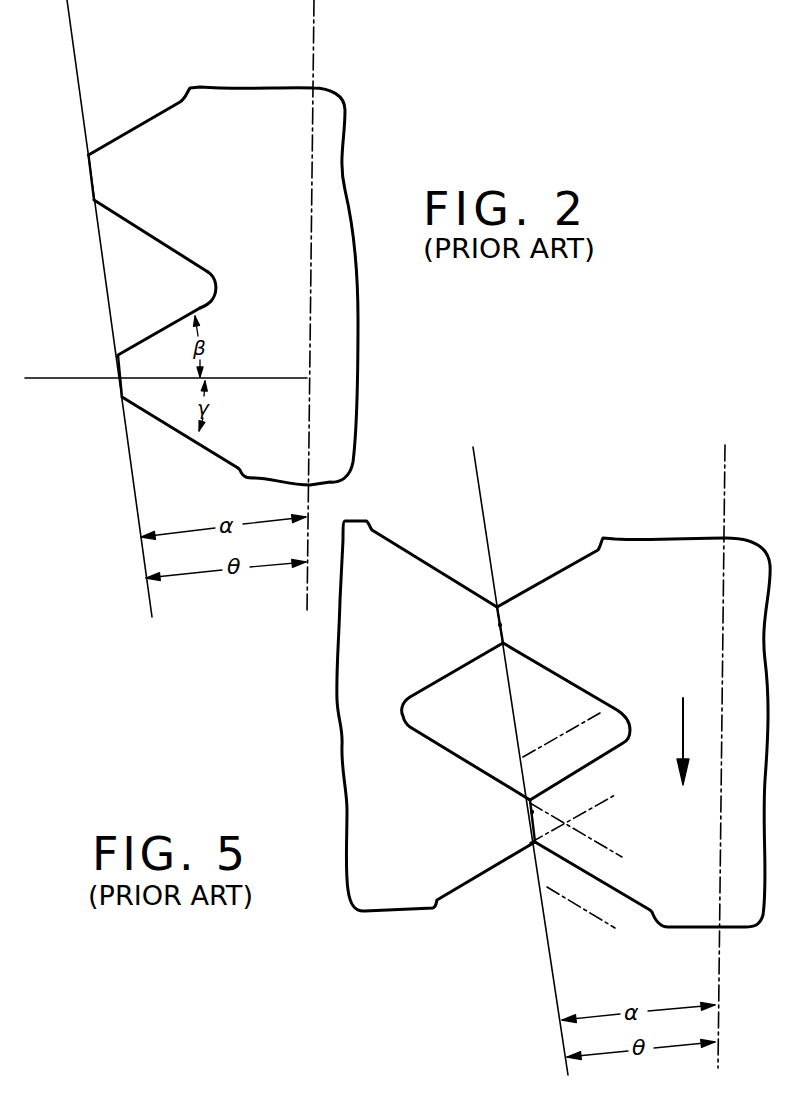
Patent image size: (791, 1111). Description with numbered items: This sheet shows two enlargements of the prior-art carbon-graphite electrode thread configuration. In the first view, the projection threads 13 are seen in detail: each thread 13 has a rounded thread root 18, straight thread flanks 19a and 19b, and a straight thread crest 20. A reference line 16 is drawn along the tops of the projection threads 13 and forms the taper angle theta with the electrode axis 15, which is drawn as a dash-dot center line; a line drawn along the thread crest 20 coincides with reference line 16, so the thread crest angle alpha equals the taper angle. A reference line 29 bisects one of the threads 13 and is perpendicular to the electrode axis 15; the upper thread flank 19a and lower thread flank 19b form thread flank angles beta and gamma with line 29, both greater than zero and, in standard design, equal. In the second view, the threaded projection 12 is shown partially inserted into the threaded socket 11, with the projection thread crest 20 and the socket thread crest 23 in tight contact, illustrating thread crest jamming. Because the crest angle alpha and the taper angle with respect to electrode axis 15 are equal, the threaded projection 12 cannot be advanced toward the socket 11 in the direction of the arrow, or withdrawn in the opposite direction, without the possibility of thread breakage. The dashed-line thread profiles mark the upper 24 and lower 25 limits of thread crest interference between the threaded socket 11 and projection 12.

In FIG. 5, the threaded socket 11 is at (340, 743).
In FIG. 5, the threaded projection 12 is at (646, 537).
In FIG. 2, the projection threads 13 is at (145, 172).
In FIG. 2, the electrode axis 15 is at (315, 18).
In FIG. 5, the electrode axis 15 is at (726, 458).
In FIG. 2, the reference line 16 is at (133, 497).
In FIG. 2, the rounded thread root 18 is at (218, 282).
In FIG. 2, the upper thread flank 19a is at (178, 318).
In FIG. 2, the lower thread flank 19b is at (205, 452).
In FIG. 2, the thread crest 20 is at (89, 178).
In FIG. 5, the thread crest 20 is at (503, 623).
In FIG. 5, the socket thread crest 23 is at (498, 630).
In FIG. 5, the upper limit of thread crest interference 24 is at (563, 733).
In FIG. 5, the lower limit of thread crest interference 25 is at (582, 912).
In FIG. 2, the reference line 29 is at (86, 385).